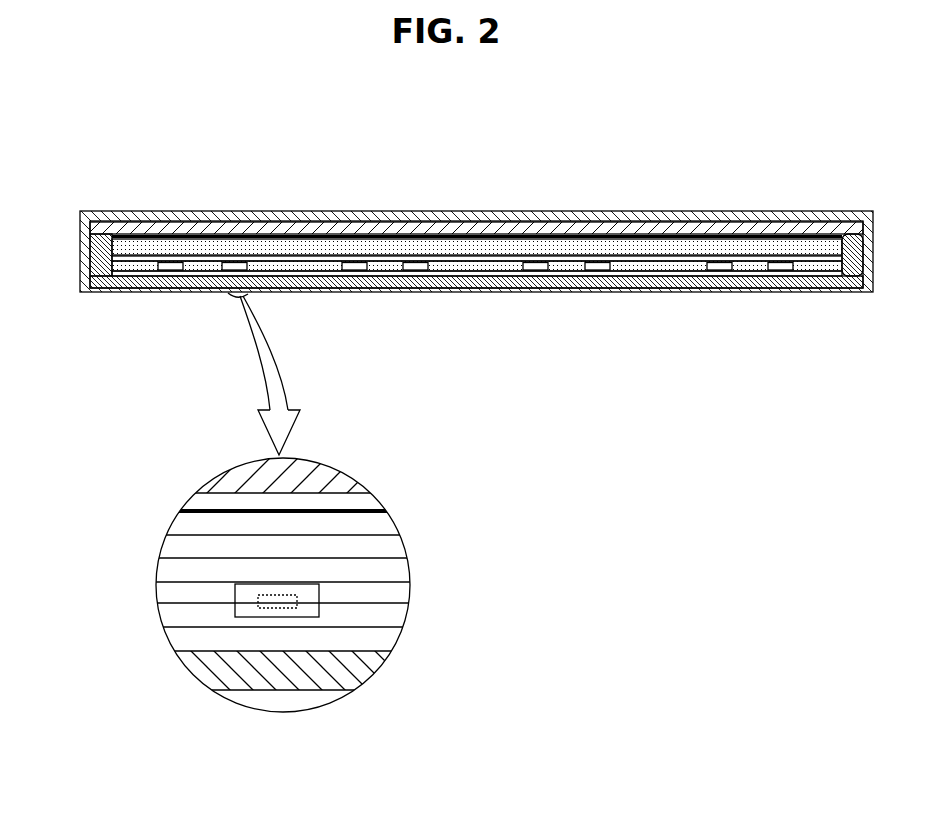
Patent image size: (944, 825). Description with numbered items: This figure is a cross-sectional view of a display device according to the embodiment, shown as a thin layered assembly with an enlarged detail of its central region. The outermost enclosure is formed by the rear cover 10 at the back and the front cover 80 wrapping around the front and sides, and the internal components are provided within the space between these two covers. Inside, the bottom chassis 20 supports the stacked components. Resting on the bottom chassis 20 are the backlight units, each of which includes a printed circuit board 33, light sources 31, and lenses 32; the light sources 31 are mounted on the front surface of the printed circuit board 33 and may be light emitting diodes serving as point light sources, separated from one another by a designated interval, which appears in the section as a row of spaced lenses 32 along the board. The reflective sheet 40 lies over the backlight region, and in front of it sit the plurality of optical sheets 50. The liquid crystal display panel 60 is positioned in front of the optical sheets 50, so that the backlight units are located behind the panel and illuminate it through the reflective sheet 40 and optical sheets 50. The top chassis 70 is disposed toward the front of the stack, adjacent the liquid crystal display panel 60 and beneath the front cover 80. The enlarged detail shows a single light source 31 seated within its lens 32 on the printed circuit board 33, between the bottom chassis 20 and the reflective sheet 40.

The rear cover 10 is at (83, 290).
The bottom chassis 20 is at (167, 278).
The light source 31 is at (277, 608).
The lens 32 is at (316, 593).
The printed circuit board 33 is at (128, 273).
The reflective sheet 40 is at (83, 273).
The optical sheets 50 is at (88, 257).
The liquid crystal display panel 60 is at (153, 238).
The top chassis 70 is at (88, 229).
The front cover 80 is at (92, 212).